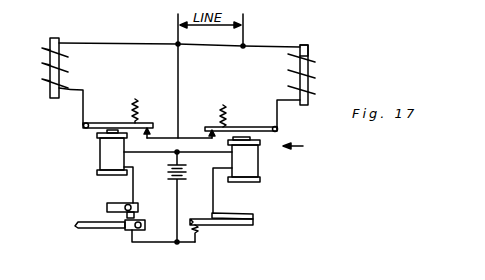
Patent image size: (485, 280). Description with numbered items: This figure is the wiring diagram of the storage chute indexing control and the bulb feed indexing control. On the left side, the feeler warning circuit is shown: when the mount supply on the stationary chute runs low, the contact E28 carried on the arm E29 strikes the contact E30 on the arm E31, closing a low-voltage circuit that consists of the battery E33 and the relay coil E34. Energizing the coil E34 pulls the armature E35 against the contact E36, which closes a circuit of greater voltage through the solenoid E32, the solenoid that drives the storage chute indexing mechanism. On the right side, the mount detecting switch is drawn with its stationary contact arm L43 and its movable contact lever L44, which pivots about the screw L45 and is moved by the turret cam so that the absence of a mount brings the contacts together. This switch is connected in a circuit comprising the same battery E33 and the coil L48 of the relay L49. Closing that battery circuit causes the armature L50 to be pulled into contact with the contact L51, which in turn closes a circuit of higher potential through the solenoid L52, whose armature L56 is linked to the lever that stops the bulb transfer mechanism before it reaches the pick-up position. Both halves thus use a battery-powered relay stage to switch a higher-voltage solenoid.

The solenoid E32 is at (72, 69).
The solenoid L52 is at (317, 61).
The armature L56 is at (309, 46).
The armature E35 is at (113, 114).
The contact E36 is at (153, 134).
The contact L51 is at (208, 136).
The armature L50 is at (248, 127).
The relay coil E34 is at (97, 157).
The relay coil L48 is at (261, 173).
The relay L49 is at (306, 147).
The battery E33 is at (180, 182).
The arm E31 is at (107, 207).
The contact E30 is at (135, 215).
The arm E29 is at (100, 230).
The roller E28 is at (141, 224).
The stationary contact arm L43 is at (238, 213).
The movable contact lever L44 is at (243, 226).
The screw L45 is at (212, 226).